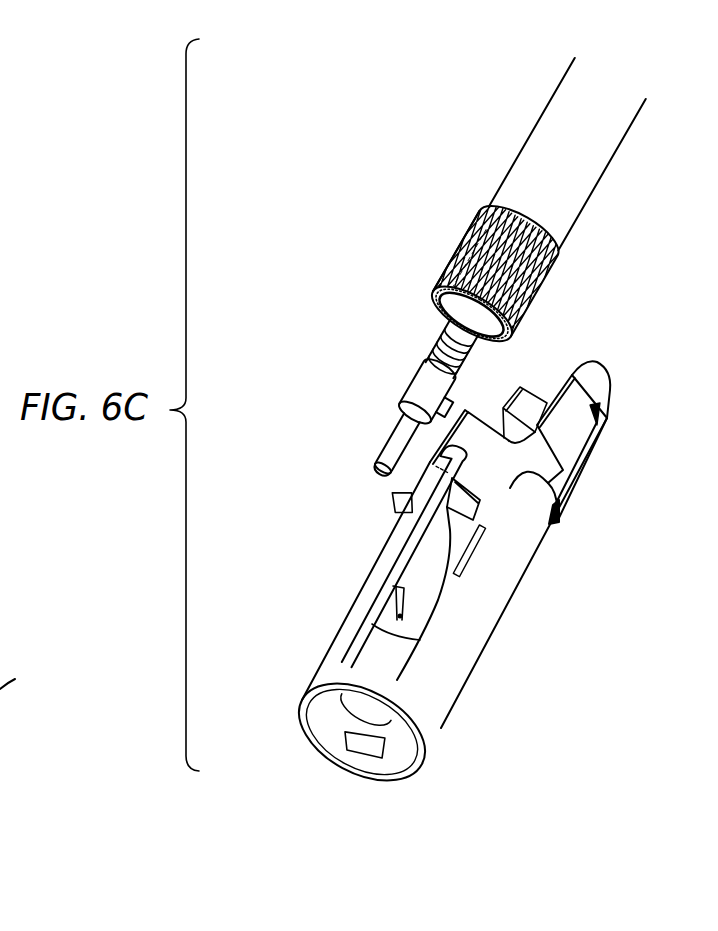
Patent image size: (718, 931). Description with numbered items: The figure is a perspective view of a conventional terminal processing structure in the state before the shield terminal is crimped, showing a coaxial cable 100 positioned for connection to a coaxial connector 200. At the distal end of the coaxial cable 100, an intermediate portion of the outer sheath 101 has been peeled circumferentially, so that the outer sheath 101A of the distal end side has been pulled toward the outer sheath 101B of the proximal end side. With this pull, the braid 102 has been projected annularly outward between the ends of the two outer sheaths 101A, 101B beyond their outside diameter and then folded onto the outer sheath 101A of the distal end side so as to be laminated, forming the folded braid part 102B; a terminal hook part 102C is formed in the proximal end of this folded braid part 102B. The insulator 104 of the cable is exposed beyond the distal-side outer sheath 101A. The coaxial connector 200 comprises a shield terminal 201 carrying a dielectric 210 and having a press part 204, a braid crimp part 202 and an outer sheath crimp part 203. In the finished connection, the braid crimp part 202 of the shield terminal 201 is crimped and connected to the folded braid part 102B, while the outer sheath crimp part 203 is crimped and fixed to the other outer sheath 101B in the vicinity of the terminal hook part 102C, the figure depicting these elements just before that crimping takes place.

The coaxial cable 100 is at (524, 103).
The outer sheath 101 is at (624, 148).
The outer sheath of distal end side 101A is at (448, 259).
The outer sheath of proximal end side 101B is at (578, 187).
The braid 102 is at (530, 320).
The folded braid part 102B is at (472, 223).
The terminal hook part 102C is at (500, 210).
The insulator 104 is at (462, 303).
The coaxial connector 200 is at (350, 522).
The shield terminal 201 is at (488, 615).
The braid crimp part 202 is at (572, 412).
The outer sheath crimp part 203 is at (597, 392).
The press part 204 is at (583, 468).
The dielectric 210 is at (358, 652).